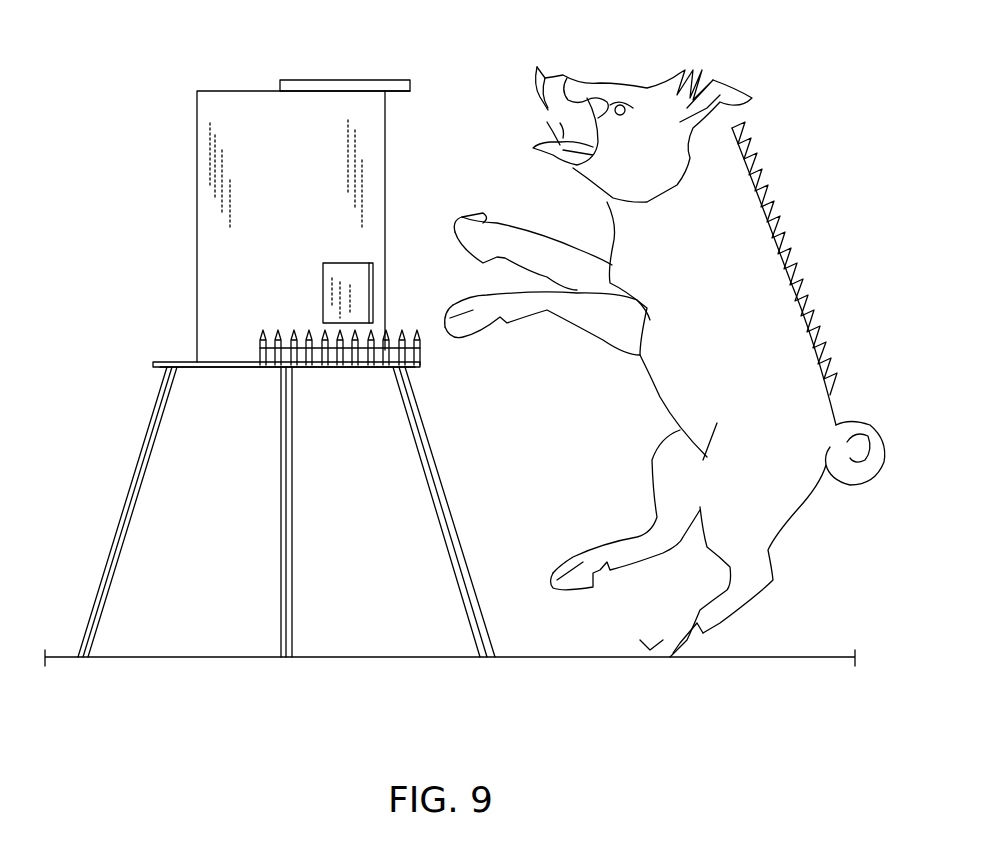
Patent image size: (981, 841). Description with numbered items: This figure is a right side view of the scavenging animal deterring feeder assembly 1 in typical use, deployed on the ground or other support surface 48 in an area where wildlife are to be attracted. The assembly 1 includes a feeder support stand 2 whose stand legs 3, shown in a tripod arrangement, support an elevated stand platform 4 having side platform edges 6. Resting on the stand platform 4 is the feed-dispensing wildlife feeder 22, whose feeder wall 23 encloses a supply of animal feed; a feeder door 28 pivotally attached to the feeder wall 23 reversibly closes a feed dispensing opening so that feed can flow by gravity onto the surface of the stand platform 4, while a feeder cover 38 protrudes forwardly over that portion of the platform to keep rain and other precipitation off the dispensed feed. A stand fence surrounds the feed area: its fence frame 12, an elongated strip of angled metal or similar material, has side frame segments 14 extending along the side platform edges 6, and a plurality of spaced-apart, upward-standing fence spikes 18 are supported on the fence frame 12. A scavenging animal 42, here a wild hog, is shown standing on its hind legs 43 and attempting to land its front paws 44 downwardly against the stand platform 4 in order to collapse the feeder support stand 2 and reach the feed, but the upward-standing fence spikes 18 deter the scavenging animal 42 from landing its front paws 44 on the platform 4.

The scavenging animal deterring feeder assembly 1 is at (210, 55).
The feeder support stand 2 is at (118, 490).
The stand leg 3 is at (283, 578).
The stand platform 4 is at (150, 366).
The side platform edge 6 is at (227, 372).
The fence frame 12 is at (428, 352).
The side frame segment 14 is at (346, 372).
The fence spike 18 is at (293, 330).
The feed-dispensing wildlife feeder 22 is at (192, 138).
The feeder wall 23 is at (232, 242).
The feeder door 28 is at (338, 263).
The feeder cover 38 is at (405, 80).
The scavenging animal 42 is at (795, 372).
The hind legs 43 is at (593, 545).
The front paws 44 is at (483, 293).
The support surface 48 is at (815, 655).